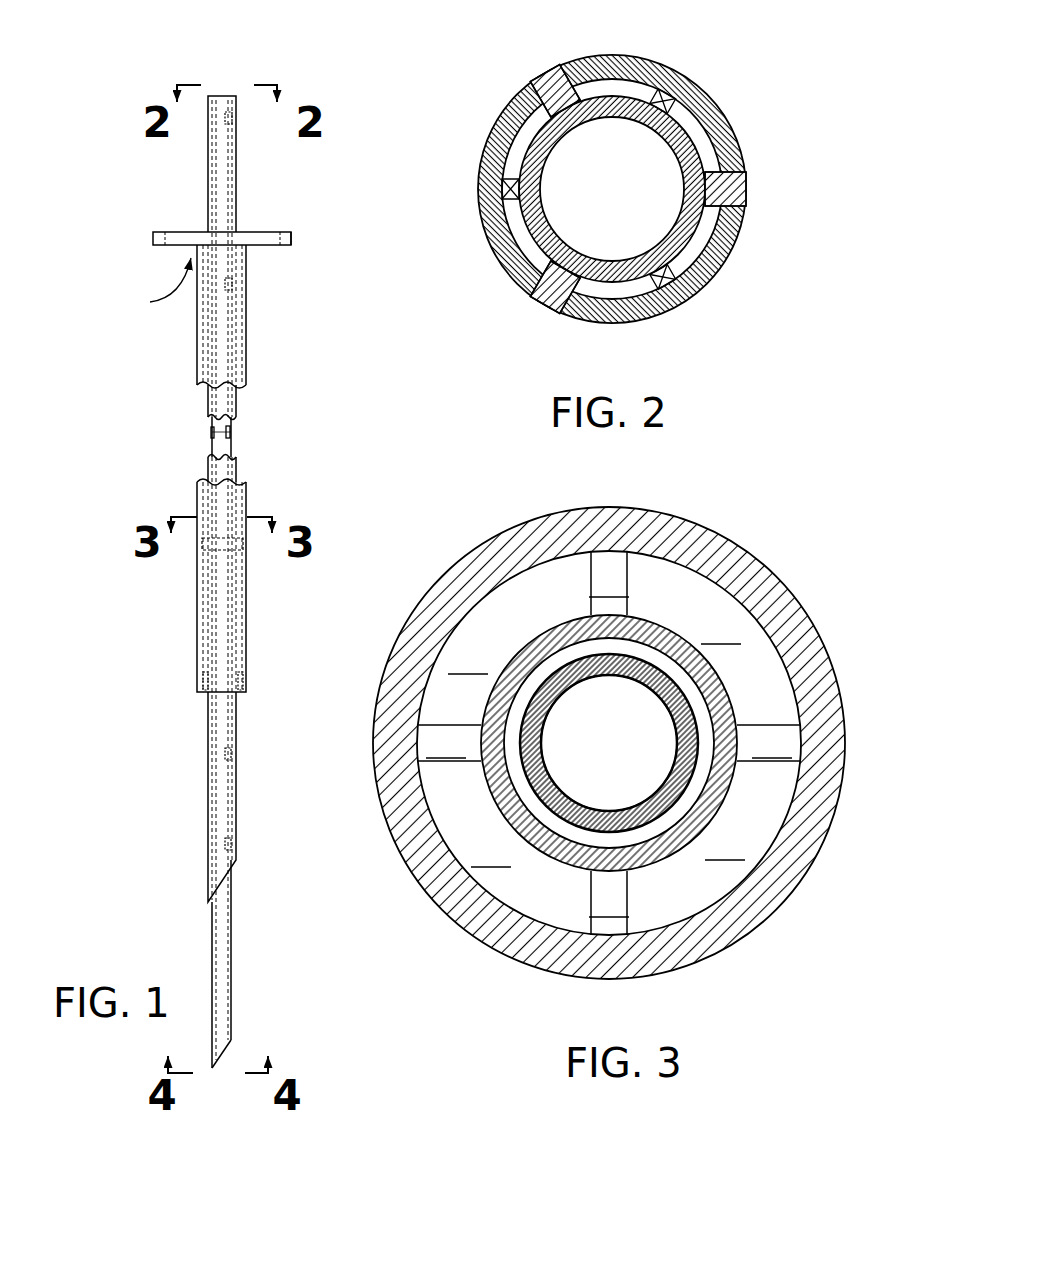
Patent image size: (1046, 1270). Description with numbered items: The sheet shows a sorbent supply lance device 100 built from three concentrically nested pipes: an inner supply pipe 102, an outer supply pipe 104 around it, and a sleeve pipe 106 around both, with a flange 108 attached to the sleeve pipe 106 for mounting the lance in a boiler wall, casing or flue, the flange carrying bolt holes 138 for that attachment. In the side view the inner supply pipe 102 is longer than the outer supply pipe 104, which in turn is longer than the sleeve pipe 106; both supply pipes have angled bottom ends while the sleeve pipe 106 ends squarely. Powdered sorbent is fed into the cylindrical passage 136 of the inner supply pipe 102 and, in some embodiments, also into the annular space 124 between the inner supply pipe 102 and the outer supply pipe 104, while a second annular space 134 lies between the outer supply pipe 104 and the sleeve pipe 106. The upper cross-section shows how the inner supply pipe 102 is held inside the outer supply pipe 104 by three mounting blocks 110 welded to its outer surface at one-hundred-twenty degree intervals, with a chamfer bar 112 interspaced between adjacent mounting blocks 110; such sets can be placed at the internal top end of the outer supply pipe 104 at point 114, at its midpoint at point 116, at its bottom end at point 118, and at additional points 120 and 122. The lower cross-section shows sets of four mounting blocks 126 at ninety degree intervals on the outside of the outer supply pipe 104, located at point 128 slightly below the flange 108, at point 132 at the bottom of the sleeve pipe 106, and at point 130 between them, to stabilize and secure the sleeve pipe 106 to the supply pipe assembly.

In FIG. 1, the sorbent supply lance device 100 is at (181, 66).
In FIG. 1, the inner supply pipe 102 is at (233, 978).
In FIG. 2, the inner supply pipe 102 is at (578, 122).
In FIG. 3, the inner supply pipe 102 is at (573, 686).
In FIG. 1, the outer supply pipe 104 is at (238, 174).
In FIG. 2, the outer supply pipe 104 is at (620, 83).
In FIG. 3, the outer supply pipe 104 is at (563, 628).
In FIG. 1, the sleeve pipe 106 is at (247, 352).
In FIG. 3, the sleeve pipe 106 is at (537, 516).
In FIG. 1, the flange 108 is at (293, 238).
In FIG. 1, the mounting block 110 is at (210, 433).
In FIG. 2, the mounting block 110 is at (668, 88).
In FIG. 2, the chamfer bar 112 is at (549, 82).
In FIG. 1, the point at internal top end of outer supply pipe 114 is at (233, 119).
In FIG. 1, the point at internal midpoint of outer supply pipe 116 is at (244, 433).
In FIG. 1, the point at internal bottom end of outer supply pipe 118 is at (248, 843).
In FIG. 1, the mounting point 120 is at (231, 285).
In FIG. 1, the mounting point 122 is at (250, 757).
In FIG. 2, the annular space 124 is at (641, 62).
In FIG. 3, the annular space 124 is at (549, 822).
In FIG. 3, the mounting block 126 is at (609, 743).
In FIG. 1, the mounting point 128 is at (147, 286).
In FIG. 1, the mounting point 130 is at (258, 545).
In FIG. 1, the mounting point 132 is at (264, 688).
In FIG. 3, the annular space 134 is at (596, 743).
In FIG. 2, the cylindrical passage 136 is at (598, 203).
In FIG. 3, the cylindrical passage 136 is at (585, 756).
In FIG. 1, the bolt holes 138 is at (160, 231).